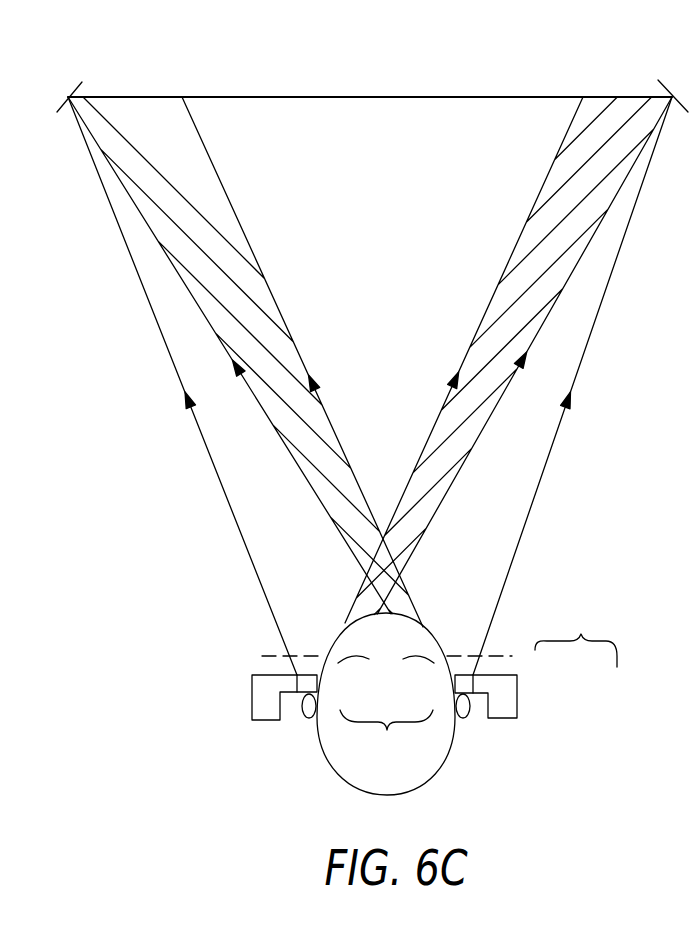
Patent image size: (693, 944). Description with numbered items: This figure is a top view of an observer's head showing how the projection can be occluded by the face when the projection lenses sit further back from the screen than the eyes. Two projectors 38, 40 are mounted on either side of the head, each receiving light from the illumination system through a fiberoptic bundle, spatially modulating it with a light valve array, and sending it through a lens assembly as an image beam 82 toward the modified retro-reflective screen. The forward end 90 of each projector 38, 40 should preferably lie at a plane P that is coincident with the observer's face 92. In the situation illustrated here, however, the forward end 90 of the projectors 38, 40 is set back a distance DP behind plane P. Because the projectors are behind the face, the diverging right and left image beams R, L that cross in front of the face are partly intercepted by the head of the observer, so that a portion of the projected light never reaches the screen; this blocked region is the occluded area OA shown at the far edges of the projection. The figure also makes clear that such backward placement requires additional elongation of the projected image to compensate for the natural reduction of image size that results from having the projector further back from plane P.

The image beam 82 is at (598, 330).
The forward end 90 is at (238, 683).
The projector 38 is at (303, 697).
The projector 40 is at (465, 717).
The observer's face 92 is at (386, 736).
The occluded area OA is at (140, 96).
The right image beam R is at (280, 312).
The left image beam L is at (484, 322).
The plane P is at (383, 658).
The distance DP is at (576, 639).